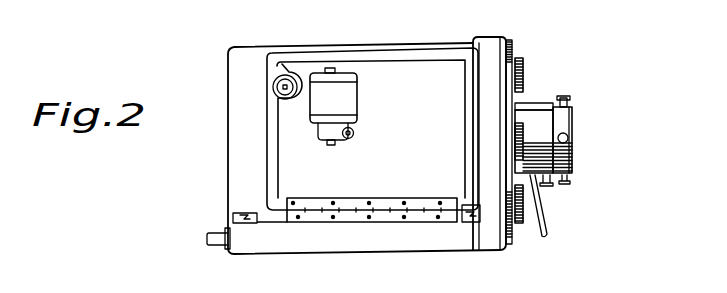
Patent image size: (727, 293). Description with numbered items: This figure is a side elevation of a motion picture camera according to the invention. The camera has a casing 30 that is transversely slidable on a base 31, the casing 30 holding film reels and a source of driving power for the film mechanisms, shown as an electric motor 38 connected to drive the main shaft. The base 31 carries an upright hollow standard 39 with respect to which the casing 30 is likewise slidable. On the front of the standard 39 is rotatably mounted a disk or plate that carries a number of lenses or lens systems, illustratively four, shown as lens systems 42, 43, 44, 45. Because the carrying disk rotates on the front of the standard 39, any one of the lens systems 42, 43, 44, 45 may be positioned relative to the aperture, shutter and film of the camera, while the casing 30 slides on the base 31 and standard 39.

The casing 30 is at (371, 106).
The base 31 is at (412, 245).
The electric motor 38 is at (345, 106).
The upright hollow standard 39 is at (493, 42).
The lens system 42 is at (552, 96).
The lens system 43 is at (524, 66).
The lens system 44 is at (522, 133).
The lens system 45 is at (519, 206).